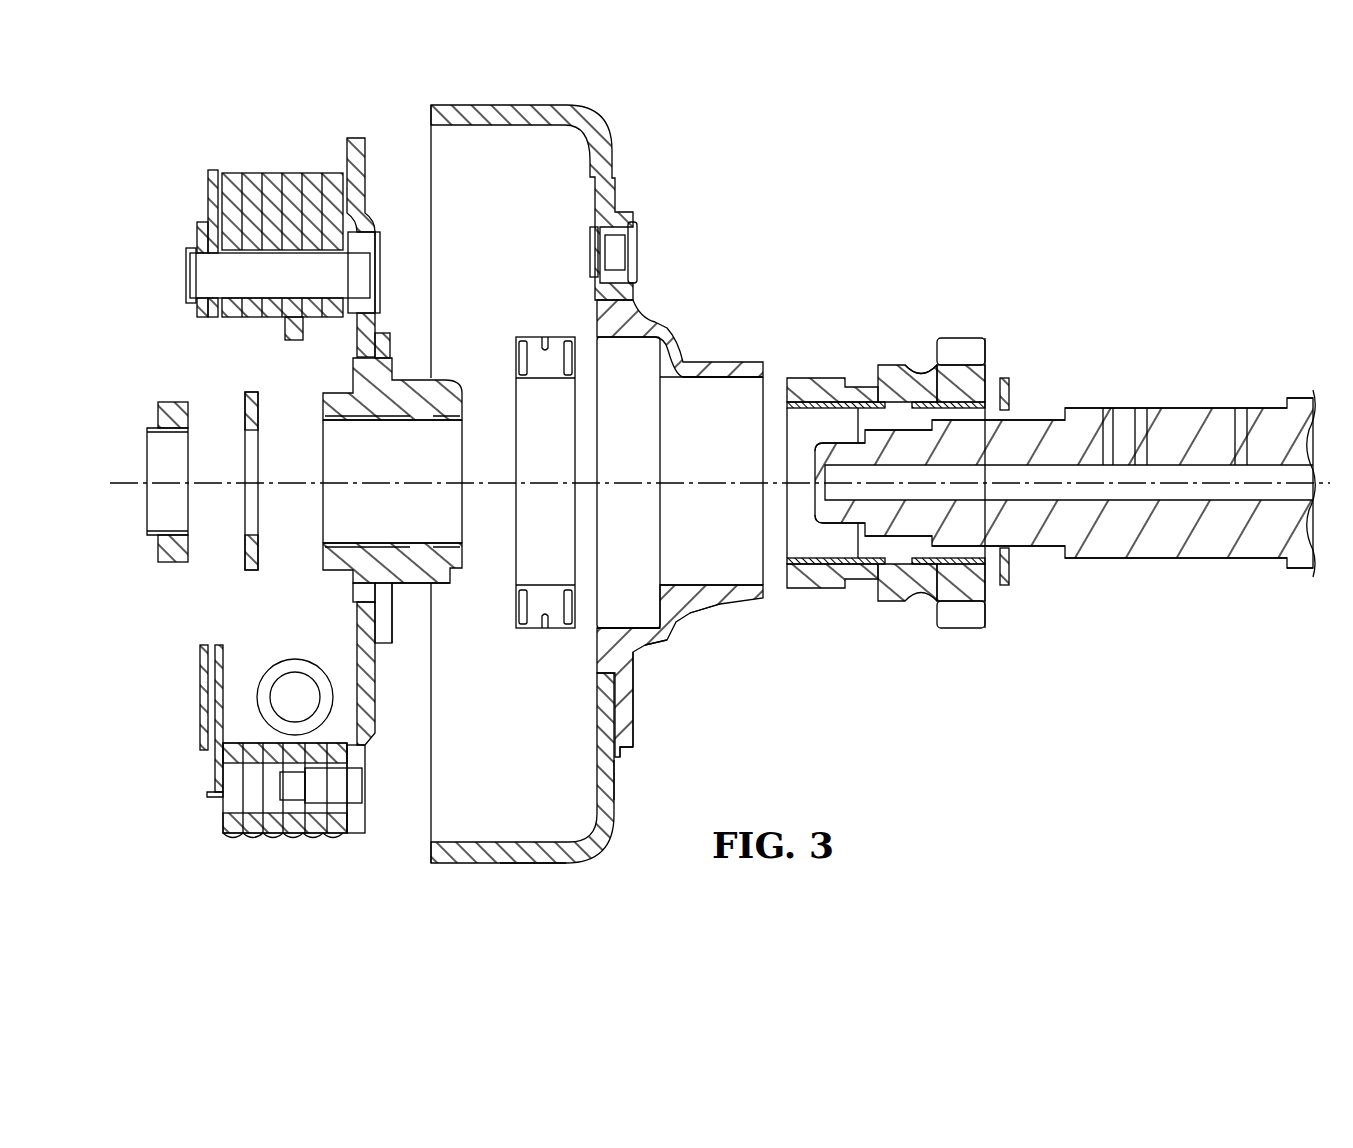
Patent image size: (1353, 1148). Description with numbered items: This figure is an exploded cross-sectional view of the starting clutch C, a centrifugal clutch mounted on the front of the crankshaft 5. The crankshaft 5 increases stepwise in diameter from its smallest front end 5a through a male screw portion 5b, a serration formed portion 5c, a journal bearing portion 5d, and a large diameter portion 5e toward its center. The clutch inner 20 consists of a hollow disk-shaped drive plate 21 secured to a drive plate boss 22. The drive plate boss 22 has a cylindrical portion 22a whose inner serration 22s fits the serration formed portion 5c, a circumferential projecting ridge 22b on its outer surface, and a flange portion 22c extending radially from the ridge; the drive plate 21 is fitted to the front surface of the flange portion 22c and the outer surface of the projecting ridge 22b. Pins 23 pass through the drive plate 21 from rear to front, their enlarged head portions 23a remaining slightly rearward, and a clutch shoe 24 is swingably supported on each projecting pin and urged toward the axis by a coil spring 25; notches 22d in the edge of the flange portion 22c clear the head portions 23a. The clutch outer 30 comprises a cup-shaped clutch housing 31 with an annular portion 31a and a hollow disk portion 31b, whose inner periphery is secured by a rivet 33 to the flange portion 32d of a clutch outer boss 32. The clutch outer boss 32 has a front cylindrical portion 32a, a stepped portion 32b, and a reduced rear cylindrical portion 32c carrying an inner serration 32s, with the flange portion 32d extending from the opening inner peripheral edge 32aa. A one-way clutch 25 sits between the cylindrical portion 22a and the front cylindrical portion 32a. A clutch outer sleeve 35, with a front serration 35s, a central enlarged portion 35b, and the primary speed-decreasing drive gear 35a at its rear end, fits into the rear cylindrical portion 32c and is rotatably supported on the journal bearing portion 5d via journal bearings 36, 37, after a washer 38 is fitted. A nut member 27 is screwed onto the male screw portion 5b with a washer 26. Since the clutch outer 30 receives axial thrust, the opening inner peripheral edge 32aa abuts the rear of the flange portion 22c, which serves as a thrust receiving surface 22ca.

The starting clutch C is at (433, 100).
The crankshaft 5 is at (1135, 392).
The front end 5a is at (842, 527).
The male screw portion 5b is at (895, 537).
The serration formed portion 5c is at (973, 547).
The journal bearing portion 5d is at (1148, 560).
The large diameter portion 5e is at (1295, 570).
The clutch inner 20 is at (300, 140).
The drive plate 21 is at (352, 138).
The drive plate boss 22 is at (415, 370).
The cylindrical portion 22a is at (417, 587).
The projecting ridge 22b is at (357, 594).
The flange portion 22c is at (387, 644).
The thrust receiving surface 22ca is at (400, 630).
The notch 22d is at (388, 322).
The serration 22s is at (352, 542).
The pin 23 is at (215, 270).
The head portion 23a is at (380, 268).
The clutch shoe 24 is at (270, 173).
The one-way clutch 25 is at (545, 337).
The washer 26 is at (255, 392).
The nut member 27 is at (175, 400).
The clutch outer 30 is at (665, 200).
The clutch housing 31 is at (567, 102).
The annular portion 31a is at (560, 868).
The hollow disk portion 31b is at (616, 778).
The clutch outer boss 32 is at (660, 330).
The front cylindrical portion 32a is at (652, 645).
The opening inner peripheral edge 32aa is at (598, 640).
The stepped portion 32b is at (680, 625).
The rear cylindrical portion 32c is at (735, 605).
The flange portion 32d is at (636, 738).
The serration 32s is at (712, 380).
The rivet 33 is at (640, 252).
The clutch outer sleeve 35 is at (887, 342).
The primary speed-decreasing drive gear 35a is at (958, 627).
The enlarged portion 35b is at (897, 365).
The serration 35s is at (810, 400).
The journal bearing 36 is at (795, 398).
The journal bearing 37 is at (968, 395).
The washer 38 is at (1010, 385).